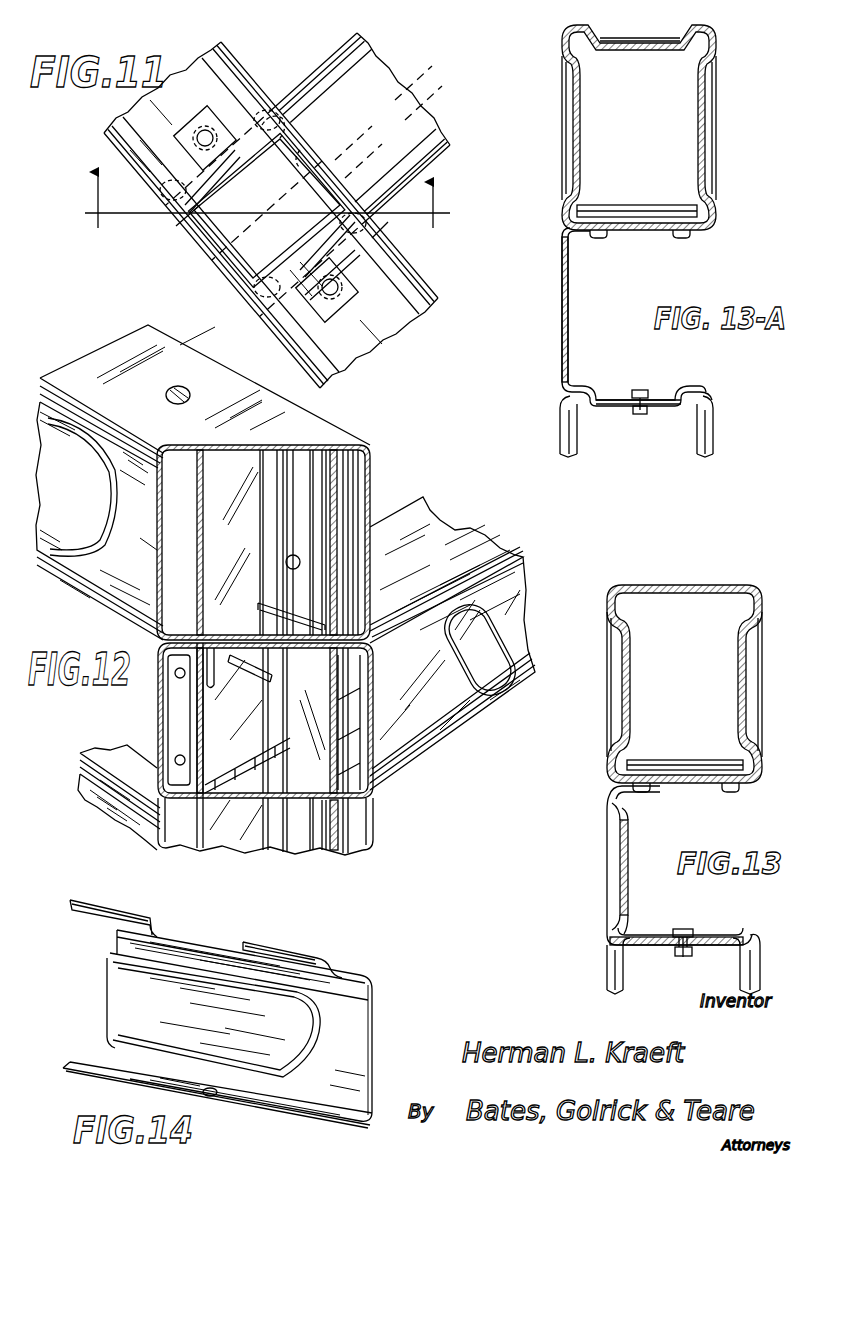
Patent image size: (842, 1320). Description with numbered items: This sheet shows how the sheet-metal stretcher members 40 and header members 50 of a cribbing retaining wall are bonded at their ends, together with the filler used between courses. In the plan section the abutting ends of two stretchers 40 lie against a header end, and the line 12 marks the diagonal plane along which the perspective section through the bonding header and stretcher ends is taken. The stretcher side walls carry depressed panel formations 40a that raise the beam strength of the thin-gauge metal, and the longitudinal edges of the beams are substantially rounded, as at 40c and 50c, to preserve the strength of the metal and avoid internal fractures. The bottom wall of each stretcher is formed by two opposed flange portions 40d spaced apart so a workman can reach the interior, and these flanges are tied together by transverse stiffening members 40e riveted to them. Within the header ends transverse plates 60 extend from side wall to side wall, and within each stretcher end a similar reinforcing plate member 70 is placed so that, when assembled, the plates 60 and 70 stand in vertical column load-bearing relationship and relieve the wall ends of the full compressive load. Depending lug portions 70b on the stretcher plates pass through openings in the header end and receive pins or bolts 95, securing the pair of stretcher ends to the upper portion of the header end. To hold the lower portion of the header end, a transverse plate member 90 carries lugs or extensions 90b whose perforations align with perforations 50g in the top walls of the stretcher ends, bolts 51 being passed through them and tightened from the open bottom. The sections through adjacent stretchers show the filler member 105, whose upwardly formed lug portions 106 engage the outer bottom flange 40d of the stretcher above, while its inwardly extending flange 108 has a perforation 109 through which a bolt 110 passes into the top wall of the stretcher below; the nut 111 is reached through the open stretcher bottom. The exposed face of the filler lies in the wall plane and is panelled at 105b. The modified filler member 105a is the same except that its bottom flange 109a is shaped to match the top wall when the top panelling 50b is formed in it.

In FIG. 11, the section line 12 is at (269, 188).
In FIG. 11, the stretcher member 40 is at (145, 192).
In FIG. 12, the stretcher member 40 is at (323, 437).
In FIG. 13A, the stretcher member 40 is at (562, 73).
In FIG. 13, the stretcher member 40 is at (608, 628).
In FIG. 13A, the depressed panel formation 40a is at (573, 140).
In FIG. 13, the depressed panel formation 40a is at (622, 696).
In FIG. 13A, the rounded longitudinal edge 40c is at (570, 32).
In FIG. 13A, the bottom flange portion 40d is at (597, 238).
In FIG. 13A, the transverse stiffening member 40e is at (645, 205).
In FIG. 13, the transverse stiffening member 40e is at (690, 784).
In FIG. 11, the header member 50 is at (320, 66).
In FIG. 12, the header member 50 is at (480, 720).
In FIG. 13A, the top panelling 50b is at (605, 428).
In FIG. 13A, the rounded longitudinal edge 50c is at (695, 392).
In FIG. 12, the perforation 50g is at (178, 388).
In FIG. 11, the bolt 51 is at (197, 133).
In FIG. 11, the transverse plate 60 is at (323, 142).
In FIG. 12, the transverse plate 60 is at (187, 728).
In FIG. 11, the end reinforcing plate member 70 is at (173, 228).
In FIG. 12, the end reinforcing plate member 70 is at (343, 498).
In FIG. 12, the depending lug portion 70b is at (203, 682).
In FIG. 12, the transverse plate member 90 is at (337, 850).
In FIG. 11, the lug 90b is at (347, 270).
In FIG. 12, the pin or bolt 95 is at (270, 672).
In FIG. 13, the filler member 105 is at (607, 855).
In FIG. 14, the filler member 105 is at (115, 945).
In FIG. 13A, the filler member 105a is at (562, 274).
In FIG. 13, the panelling 105b is at (628, 890).
In FIG. 14, the panelling 105b is at (297, 1037).
In FIG. 14, the lug portion 106 is at (130, 917).
In FIG. 14, the inwardly extending flange 108 is at (100, 1067).
In FIG. 14, the perforation 109 is at (213, 1097).
In FIG. 13A, the bottom flange 109a is at (650, 388).
In FIG. 13, the bolt 110 is at (690, 929).
In FIG. 13, the nut 111 is at (692, 952).